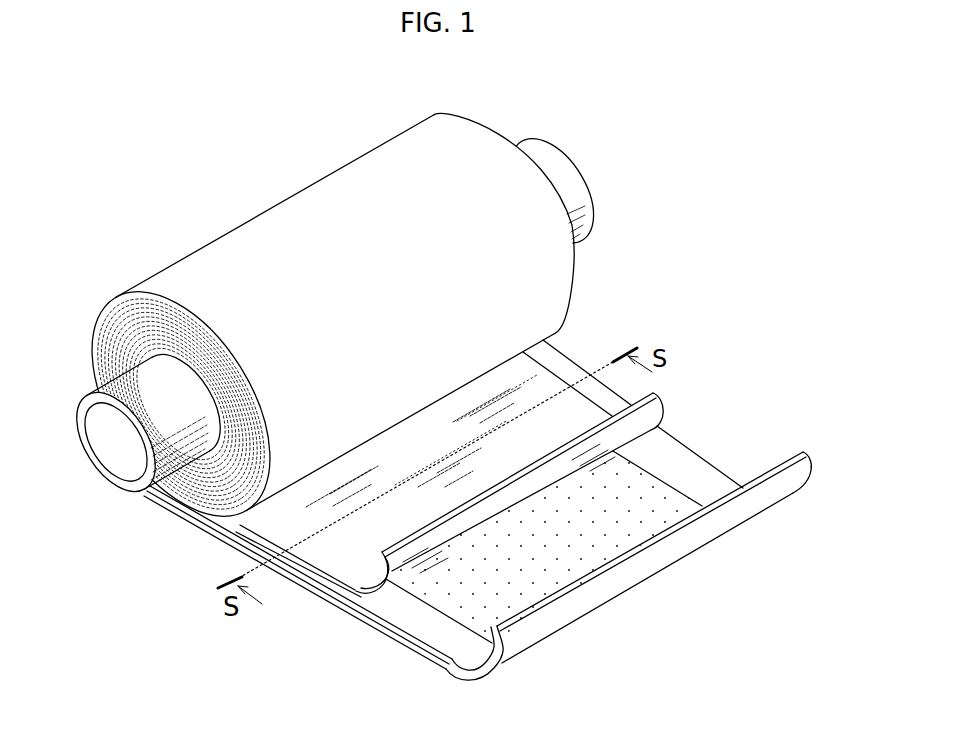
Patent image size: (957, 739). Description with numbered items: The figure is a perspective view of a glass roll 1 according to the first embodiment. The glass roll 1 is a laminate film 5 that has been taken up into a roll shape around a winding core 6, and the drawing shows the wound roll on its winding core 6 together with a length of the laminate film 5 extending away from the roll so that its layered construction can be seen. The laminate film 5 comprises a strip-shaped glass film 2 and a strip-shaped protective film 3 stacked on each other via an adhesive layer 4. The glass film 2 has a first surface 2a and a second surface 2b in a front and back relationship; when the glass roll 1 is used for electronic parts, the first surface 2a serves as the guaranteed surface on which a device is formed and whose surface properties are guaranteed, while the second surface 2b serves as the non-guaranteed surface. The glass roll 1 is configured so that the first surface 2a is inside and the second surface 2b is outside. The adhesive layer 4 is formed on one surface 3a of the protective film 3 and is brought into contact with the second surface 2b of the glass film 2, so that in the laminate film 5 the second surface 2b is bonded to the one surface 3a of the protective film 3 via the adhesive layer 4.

The glass roll 1 is at (235, 178).
The glass film 2 is at (671, 395).
The first surface 2a is at (540, 420).
The second surface 2b is at (647, 418).
The protective film 3 is at (822, 461).
The one surface 3a is at (703, 480).
The adhesive layer 4 is at (463, 592).
The laminate film 5 is at (204, 553).
The winding core 6 is at (93, 457).